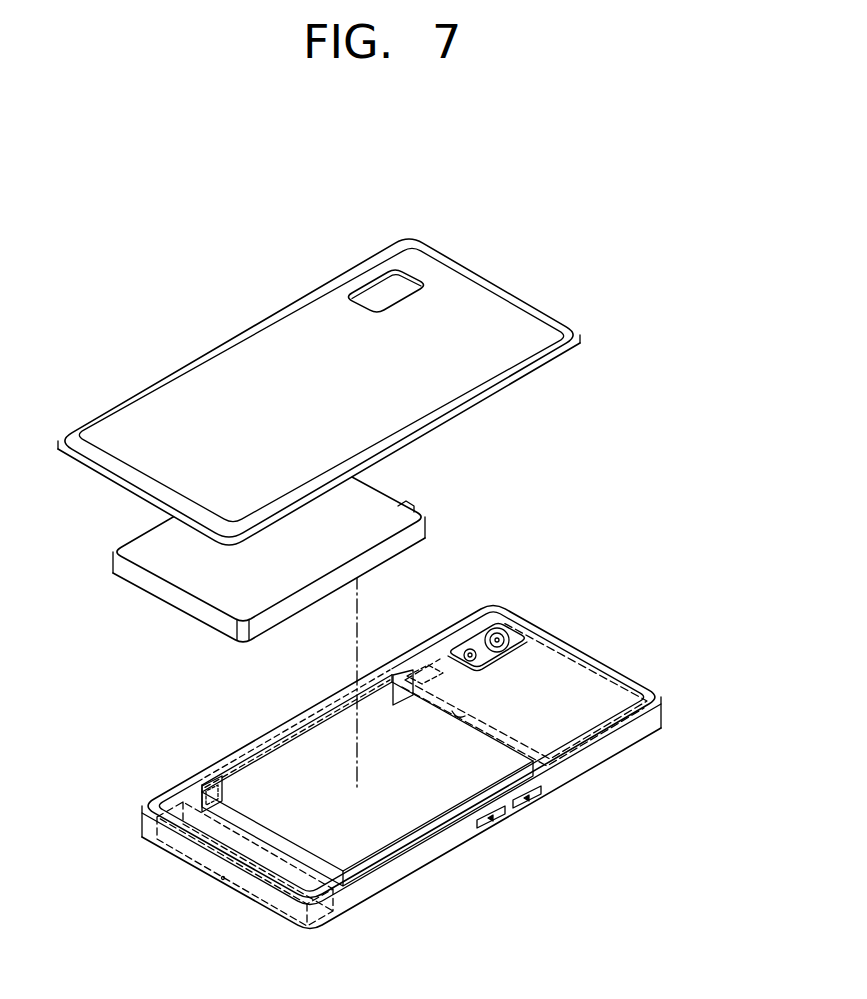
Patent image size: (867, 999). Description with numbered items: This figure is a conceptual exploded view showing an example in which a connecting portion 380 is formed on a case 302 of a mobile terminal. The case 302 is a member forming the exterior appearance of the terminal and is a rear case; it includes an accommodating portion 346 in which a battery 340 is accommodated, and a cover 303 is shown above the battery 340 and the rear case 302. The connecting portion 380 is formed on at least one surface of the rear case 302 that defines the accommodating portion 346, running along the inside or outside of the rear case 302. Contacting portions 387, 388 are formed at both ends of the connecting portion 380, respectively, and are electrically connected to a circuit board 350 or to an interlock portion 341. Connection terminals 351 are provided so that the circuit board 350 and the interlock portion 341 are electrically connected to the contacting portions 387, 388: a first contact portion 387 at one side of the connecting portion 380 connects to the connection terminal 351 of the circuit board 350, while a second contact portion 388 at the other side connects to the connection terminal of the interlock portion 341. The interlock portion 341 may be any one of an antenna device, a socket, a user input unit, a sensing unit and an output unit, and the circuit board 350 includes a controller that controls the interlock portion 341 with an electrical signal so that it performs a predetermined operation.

The rear case 302 is at (622, 678).
The rear cover 303 is at (490, 293).
The battery 340 is at (172, 592).
The interlock portion 341 is at (176, 818).
The accommodating portion 346 is at (385, 828).
The circuit board 350 is at (566, 652).
The connection terminal 351 is at (428, 672).
The connecting portion 380 is at (280, 745).
The contacting portion 387 is at (401, 688).
The contacting portion 388 is at (204, 798).